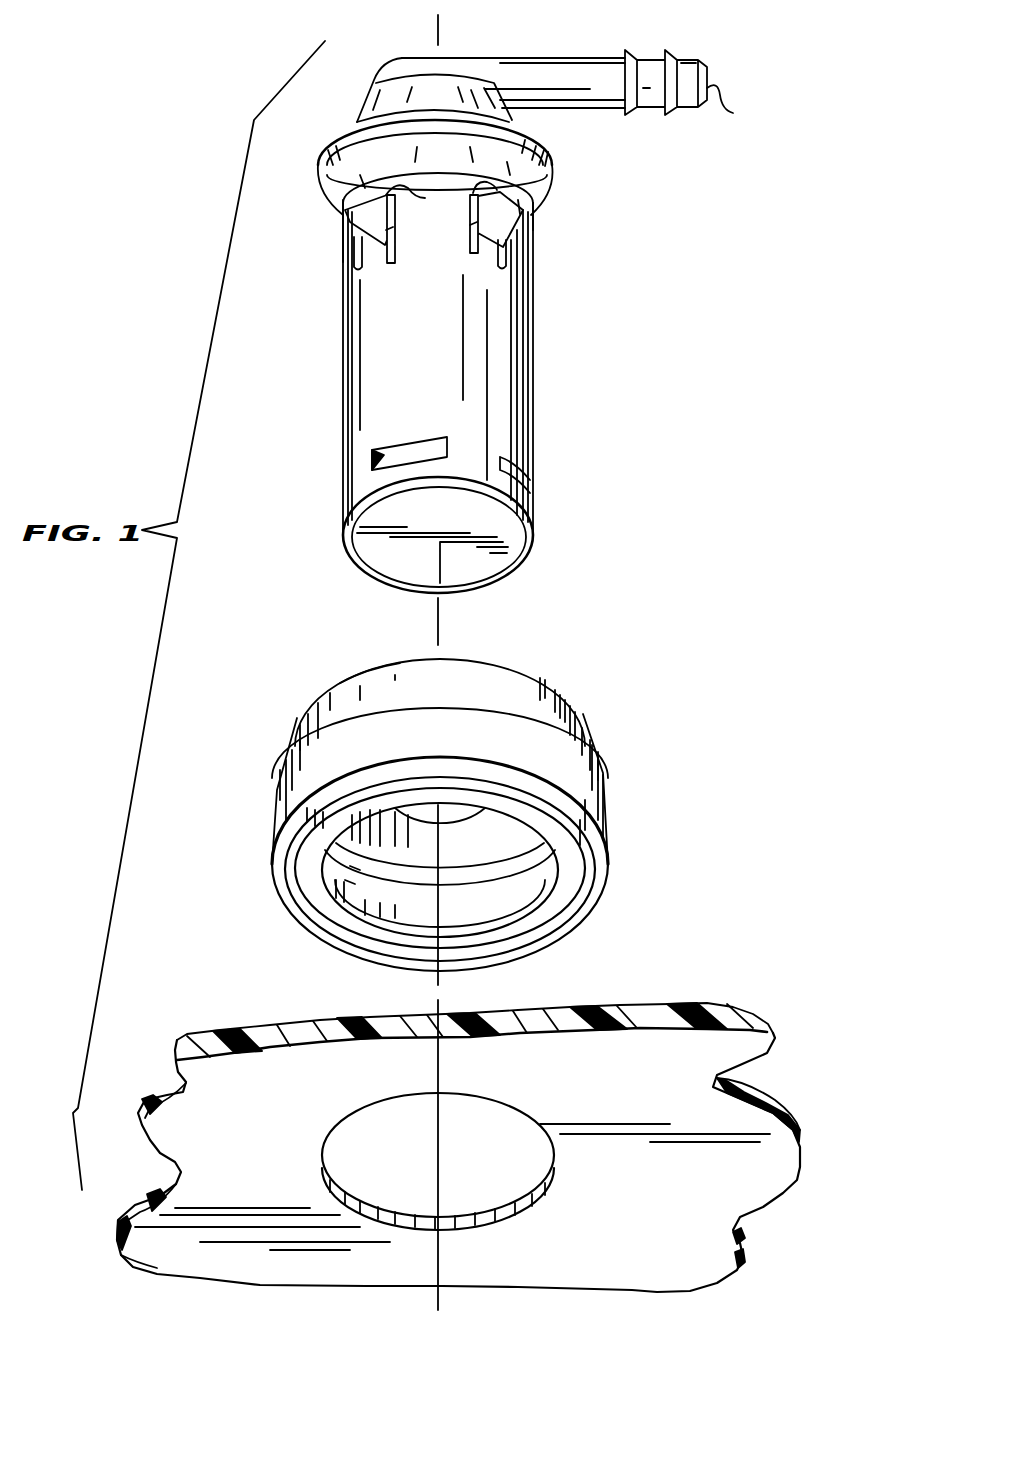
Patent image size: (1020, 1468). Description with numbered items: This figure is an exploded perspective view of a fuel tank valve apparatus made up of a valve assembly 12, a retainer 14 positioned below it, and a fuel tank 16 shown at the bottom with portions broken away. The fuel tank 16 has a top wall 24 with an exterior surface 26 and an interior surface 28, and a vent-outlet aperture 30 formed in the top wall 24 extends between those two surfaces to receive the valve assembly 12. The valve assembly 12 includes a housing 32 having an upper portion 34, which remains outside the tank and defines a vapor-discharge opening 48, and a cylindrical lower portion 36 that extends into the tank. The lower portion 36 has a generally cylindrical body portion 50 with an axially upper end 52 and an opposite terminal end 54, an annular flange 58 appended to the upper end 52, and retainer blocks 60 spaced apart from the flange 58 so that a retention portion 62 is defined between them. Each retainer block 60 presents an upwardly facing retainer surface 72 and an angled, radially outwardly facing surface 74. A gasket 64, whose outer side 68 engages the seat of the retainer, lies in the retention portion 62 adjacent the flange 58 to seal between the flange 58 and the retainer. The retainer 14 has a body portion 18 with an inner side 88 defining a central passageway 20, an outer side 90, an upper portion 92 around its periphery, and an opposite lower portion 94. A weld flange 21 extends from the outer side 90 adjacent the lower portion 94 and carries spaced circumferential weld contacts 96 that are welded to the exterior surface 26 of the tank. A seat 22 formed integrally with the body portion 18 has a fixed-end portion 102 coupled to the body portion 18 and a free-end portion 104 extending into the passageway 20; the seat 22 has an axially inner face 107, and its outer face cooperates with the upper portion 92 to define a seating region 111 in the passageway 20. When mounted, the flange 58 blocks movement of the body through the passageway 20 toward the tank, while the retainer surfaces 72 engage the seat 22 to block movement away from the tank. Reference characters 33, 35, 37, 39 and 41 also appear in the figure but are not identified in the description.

The valve assembly 12 is at (590, 318).
The retainer 14 is at (624, 746).
The fuel tank 16 is at (768, 1002).
The body portion 18 is at (532, 710).
The central passageway 20 is at (393, 873).
The weld flange 21 is at (612, 813).
The seat 22 is at (533, 903).
The top wall 24 is at (794, 1135).
The exterior surface 26 is at (706, 1000).
The interior surface 28 is at (739, 1194).
The vent-outlet aperture 30 is at (497, 1204).
The housing 32 is at (340, 345).
The bottom rim 33 is at (338, 525).
The upper portion 34 is at (592, 53).
The bottom opening 35 is at (397, 552).
The cylindrical lower portion 36 is at (497, 417).
The flange 37 is at (357, 128).
The dome cap 39 is at (402, 90).
The barbed fitting 41 is at (613, 83).
The vapor-discharge opening 48 is at (739, 105).
The cylindrical body portion 50 is at (487, 350).
The axially upper end 52 is at (527, 227).
The terminal end 54 is at (533, 517).
The annular flange 58 is at (547, 158).
The retainer blocks 60 is at (358, 228).
The retention portion 62 is at (364, 189).
The gasket 64 is at (520, 188).
The outer side 68 is at (368, 163).
The retainer surface 72 is at (441, 196).
The angled radially outwardly facing surface 74 is at (370, 240).
The inner side 88 is at (512, 833).
The outer side 90 is at (310, 710).
The upper portion 92 is at (340, 683).
The lower portion 94 is at (517, 922).
The weld contacts 96 is at (323, 827).
The fixed-end portion 102 is at (480, 908).
The free-end portion 104 is at (453, 873).
The axially inner face 107 is at (475, 908).
The seating region 111 is at (410, 848).